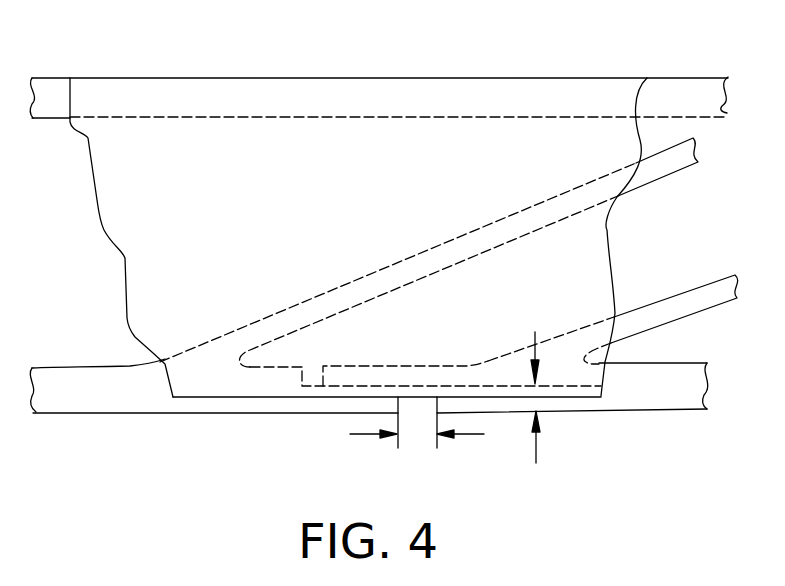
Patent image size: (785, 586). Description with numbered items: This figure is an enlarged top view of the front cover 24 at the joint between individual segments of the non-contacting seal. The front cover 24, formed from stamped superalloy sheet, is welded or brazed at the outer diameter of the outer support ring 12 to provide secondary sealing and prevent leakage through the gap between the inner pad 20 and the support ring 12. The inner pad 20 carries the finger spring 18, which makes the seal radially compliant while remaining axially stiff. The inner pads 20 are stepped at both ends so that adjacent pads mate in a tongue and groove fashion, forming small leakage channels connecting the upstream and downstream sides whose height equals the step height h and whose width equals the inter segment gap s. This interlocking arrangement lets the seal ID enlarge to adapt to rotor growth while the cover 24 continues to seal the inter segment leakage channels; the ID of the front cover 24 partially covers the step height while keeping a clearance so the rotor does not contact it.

The outer support ring 12 is at (654, 78).
The finger spring 18 is at (702, 297).
The inner pad 20 is at (675, 377).
The front cover 24 is at (403, 157).
The inner diameter ID is at (634, 410).
The step height h is at (537, 414).
The inter segment gap s is at (417, 435).